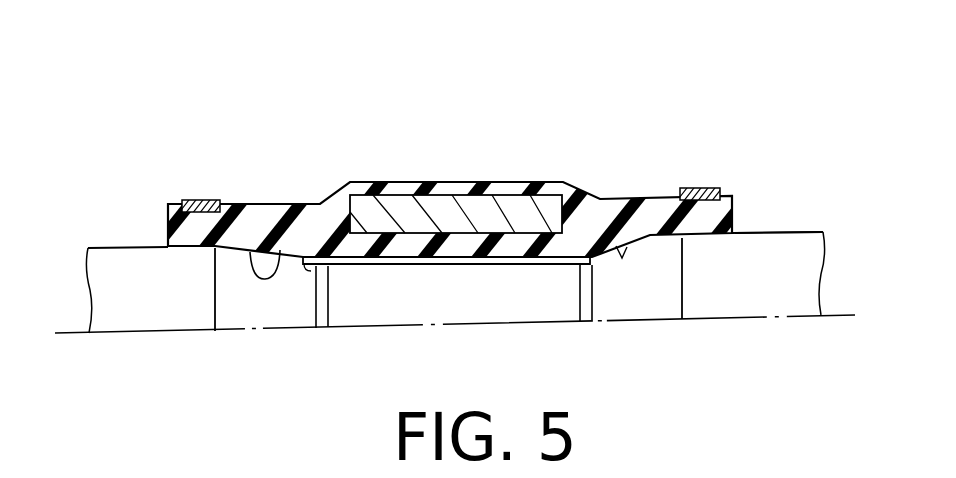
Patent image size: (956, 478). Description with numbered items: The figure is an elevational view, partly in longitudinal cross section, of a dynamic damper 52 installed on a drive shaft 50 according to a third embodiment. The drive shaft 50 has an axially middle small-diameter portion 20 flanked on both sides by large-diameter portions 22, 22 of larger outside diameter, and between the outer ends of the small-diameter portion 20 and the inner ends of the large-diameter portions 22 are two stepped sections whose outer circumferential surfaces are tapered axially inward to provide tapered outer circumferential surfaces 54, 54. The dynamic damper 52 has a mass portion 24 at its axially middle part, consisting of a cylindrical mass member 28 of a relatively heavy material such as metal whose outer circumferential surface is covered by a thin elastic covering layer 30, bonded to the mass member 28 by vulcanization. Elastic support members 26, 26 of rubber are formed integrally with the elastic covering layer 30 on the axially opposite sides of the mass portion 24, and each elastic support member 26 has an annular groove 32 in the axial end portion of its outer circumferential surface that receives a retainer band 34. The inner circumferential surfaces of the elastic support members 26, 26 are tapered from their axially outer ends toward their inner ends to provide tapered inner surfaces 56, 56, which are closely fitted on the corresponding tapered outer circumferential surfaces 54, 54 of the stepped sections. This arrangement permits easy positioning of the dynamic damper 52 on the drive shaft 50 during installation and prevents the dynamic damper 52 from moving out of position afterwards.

The small-diameter portion 20 is at (475, 305).
The large-diameter portion 22 is at (121, 262).
The mass portion 24 is at (453, 180).
The elastic support member 26 is at (265, 199).
The mass member 28 is at (402, 212).
The elastic covering layer 30 is at (519, 182).
The annular groove 32 is at (183, 198).
The retainer band 34 is at (197, 199).
The drive shaft 50 is at (797, 230).
The dynamic damper 52 is at (596, 120).
The tapered outer circumferential surface 54 is at (243, 300).
The tapered inner surface 56 is at (280, 250).